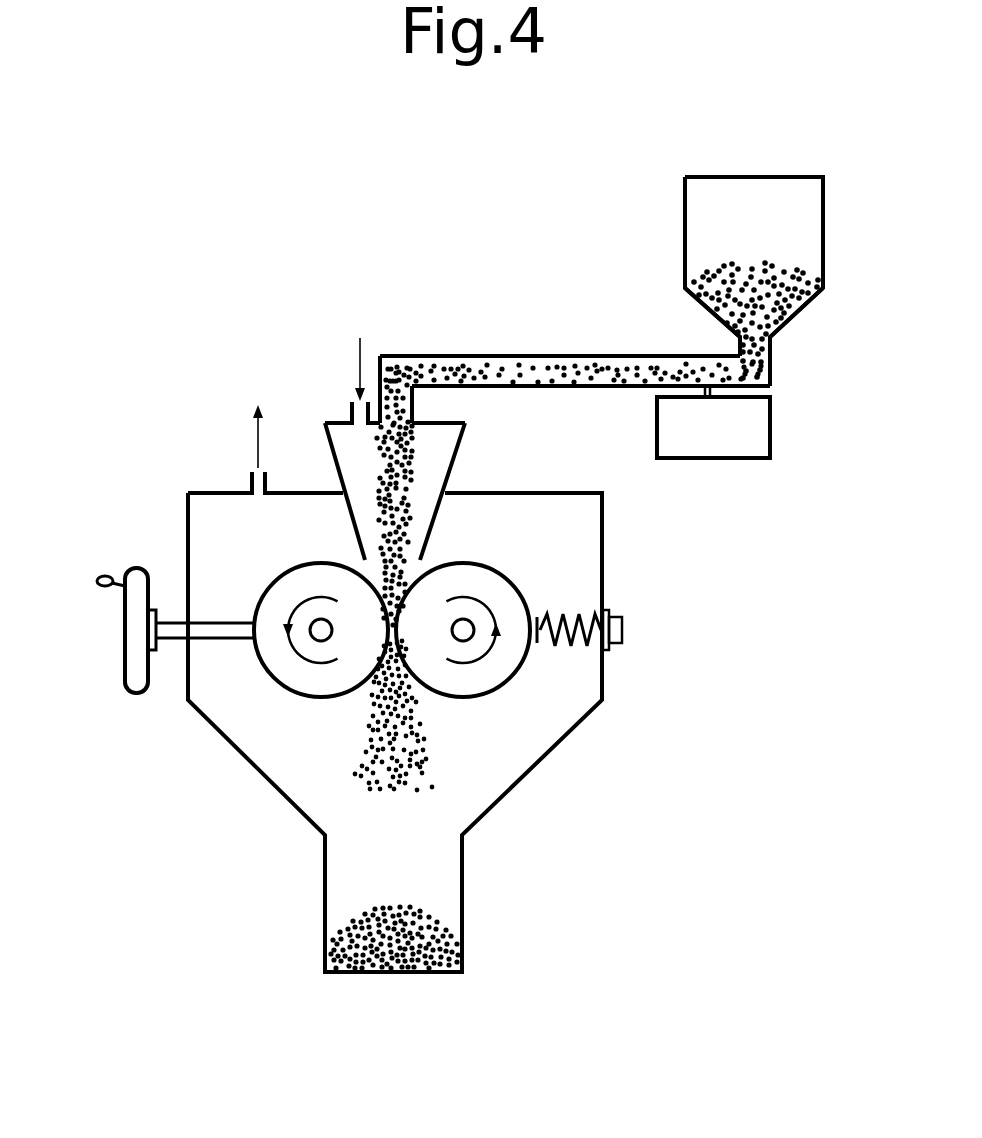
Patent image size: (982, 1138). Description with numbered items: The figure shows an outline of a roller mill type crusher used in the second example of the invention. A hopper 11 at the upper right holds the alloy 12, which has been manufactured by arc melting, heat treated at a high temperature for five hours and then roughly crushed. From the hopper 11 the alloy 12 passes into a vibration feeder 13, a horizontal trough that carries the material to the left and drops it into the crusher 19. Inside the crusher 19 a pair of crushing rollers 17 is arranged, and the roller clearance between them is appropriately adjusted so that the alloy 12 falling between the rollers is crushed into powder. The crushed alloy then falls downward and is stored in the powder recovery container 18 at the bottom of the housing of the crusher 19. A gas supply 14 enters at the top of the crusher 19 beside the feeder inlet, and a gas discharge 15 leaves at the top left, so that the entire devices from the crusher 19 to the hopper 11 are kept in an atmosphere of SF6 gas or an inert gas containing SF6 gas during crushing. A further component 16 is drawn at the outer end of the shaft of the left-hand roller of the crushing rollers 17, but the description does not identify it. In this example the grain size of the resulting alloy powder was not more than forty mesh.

The hopper 11 is at (797, 248).
The alloy 12 is at (797, 312).
The vibration feeder 13 is at (562, 357).
The gas supply 14 is at (358, 361).
The gas discharge 15 is at (256, 446).
The handwheel 16 is at (124, 670).
The crushing rollers 17 is at (340, 675).
The powder recovery container 18 is at (425, 910).
The crusher 19 is at (603, 540).